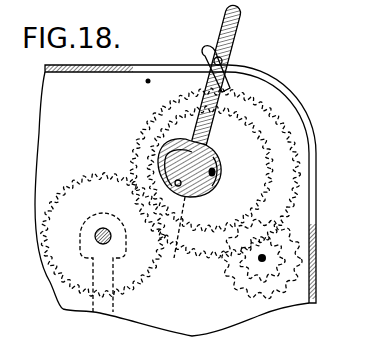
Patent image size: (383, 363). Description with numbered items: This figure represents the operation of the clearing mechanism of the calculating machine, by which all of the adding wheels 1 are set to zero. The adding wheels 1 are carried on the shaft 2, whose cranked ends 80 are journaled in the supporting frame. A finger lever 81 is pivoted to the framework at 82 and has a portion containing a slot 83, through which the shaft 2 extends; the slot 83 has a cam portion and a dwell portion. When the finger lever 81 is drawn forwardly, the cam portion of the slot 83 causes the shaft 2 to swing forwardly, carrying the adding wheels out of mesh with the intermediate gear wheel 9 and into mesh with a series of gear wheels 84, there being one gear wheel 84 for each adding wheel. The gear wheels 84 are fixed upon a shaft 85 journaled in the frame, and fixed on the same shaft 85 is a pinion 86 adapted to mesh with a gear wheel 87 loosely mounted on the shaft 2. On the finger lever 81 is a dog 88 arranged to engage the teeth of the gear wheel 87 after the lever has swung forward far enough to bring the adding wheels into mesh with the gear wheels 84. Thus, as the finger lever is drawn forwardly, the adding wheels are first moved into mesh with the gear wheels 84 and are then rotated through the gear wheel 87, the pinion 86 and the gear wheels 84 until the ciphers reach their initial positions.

The adding wheel 1 is at (280, 89).
The shaft 2 is at (214, 158).
The intermediate gear wheel 9 is at (85, 176).
The cranked end 80 is at (216, 174).
The finger lever 81 is at (241, 19).
The pivot 82 is at (313, 87).
The slot 83 is at (188, 150).
The gear wheel 84 is at (276, 297).
The shaft 85 is at (264, 259).
The pinion 86 is at (234, 289).
The gear wheel 87 is at (235, 178).
The dog 88 is at (231, 72).